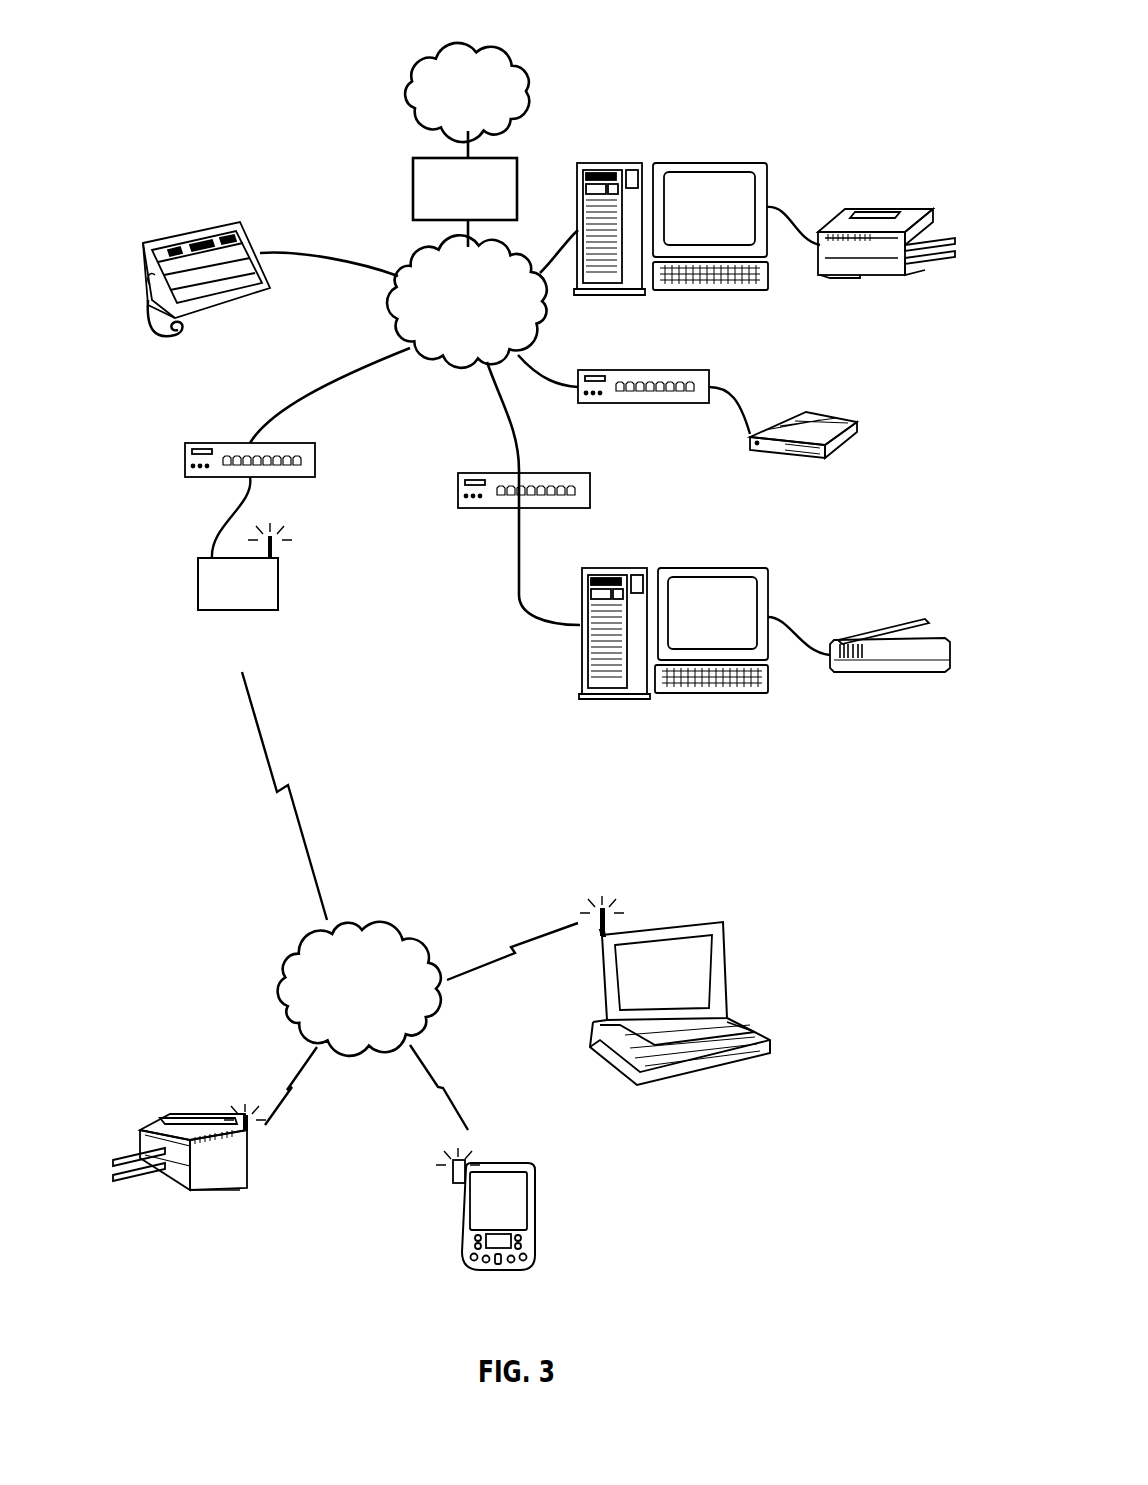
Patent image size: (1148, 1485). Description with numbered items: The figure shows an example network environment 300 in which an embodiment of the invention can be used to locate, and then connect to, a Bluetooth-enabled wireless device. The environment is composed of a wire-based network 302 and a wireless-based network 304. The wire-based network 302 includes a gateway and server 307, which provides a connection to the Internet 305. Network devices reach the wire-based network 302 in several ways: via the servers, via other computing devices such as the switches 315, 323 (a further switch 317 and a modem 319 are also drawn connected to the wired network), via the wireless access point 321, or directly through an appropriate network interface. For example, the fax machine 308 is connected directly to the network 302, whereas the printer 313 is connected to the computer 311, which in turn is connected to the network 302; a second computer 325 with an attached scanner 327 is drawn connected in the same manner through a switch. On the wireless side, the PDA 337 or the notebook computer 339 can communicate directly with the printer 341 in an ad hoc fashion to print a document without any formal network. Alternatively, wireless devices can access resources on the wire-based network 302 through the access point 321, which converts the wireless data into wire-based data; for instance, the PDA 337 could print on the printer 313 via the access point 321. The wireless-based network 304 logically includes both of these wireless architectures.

The network environment 300 is at (192, 76).
The wire-based network 302 is at (415, 427).
The wireless-based network 304 is at (421, 1026).
The Internet 305 is at (530, 72).
The gateway and server 307 is at (418, 158).
The fax machine 308 is at (243, 225).
The computer 311 is at (706, 163).
The printer 313 is at (868, 207).
The switch 315 is at (207, 443).
The switch 317 is at (668, 370).
The modem 319 is at (793, 412).
The wireless access point 321 is at (262, 721).
The switch 323 is at (546, 473).
The computer 325 is at (710, 567).
The scanner 327 is at (893, 636).
The PDA 337 is at (506, 1165).
The notebook computer 339 is at (706, 922).
The printer 341 is at (205, 1120).